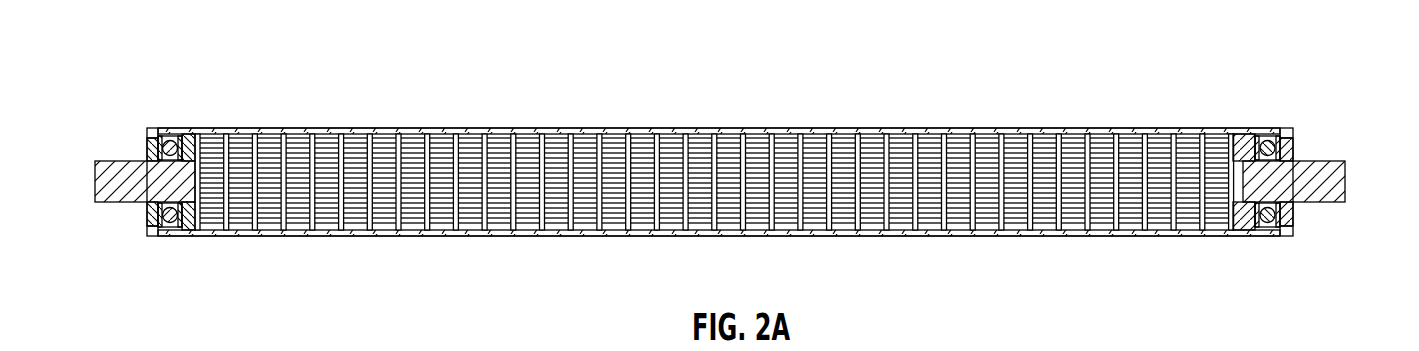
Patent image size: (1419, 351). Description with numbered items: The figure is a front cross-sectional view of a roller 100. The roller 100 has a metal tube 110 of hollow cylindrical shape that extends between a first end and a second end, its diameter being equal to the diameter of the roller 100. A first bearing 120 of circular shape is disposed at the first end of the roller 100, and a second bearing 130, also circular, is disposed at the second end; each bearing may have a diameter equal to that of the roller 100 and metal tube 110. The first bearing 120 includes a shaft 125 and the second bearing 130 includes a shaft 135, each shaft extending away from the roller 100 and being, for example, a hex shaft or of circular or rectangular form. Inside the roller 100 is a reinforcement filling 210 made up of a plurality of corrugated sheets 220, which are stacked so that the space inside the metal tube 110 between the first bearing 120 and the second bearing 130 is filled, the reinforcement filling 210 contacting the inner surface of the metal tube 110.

The roller 100 is at (92, 53).
The metal tube 110 is at (538, 128).
The first bearing 120 is at (157, 138).
The shaft 125 is at (98, 190).
The second bearing 130 is at (1268, 147).
The shaft 135 is at (1328, 182).
The reinforcement filling 210 is at (847, 153).
The corrugated sheets 220 is at (1040, 128).